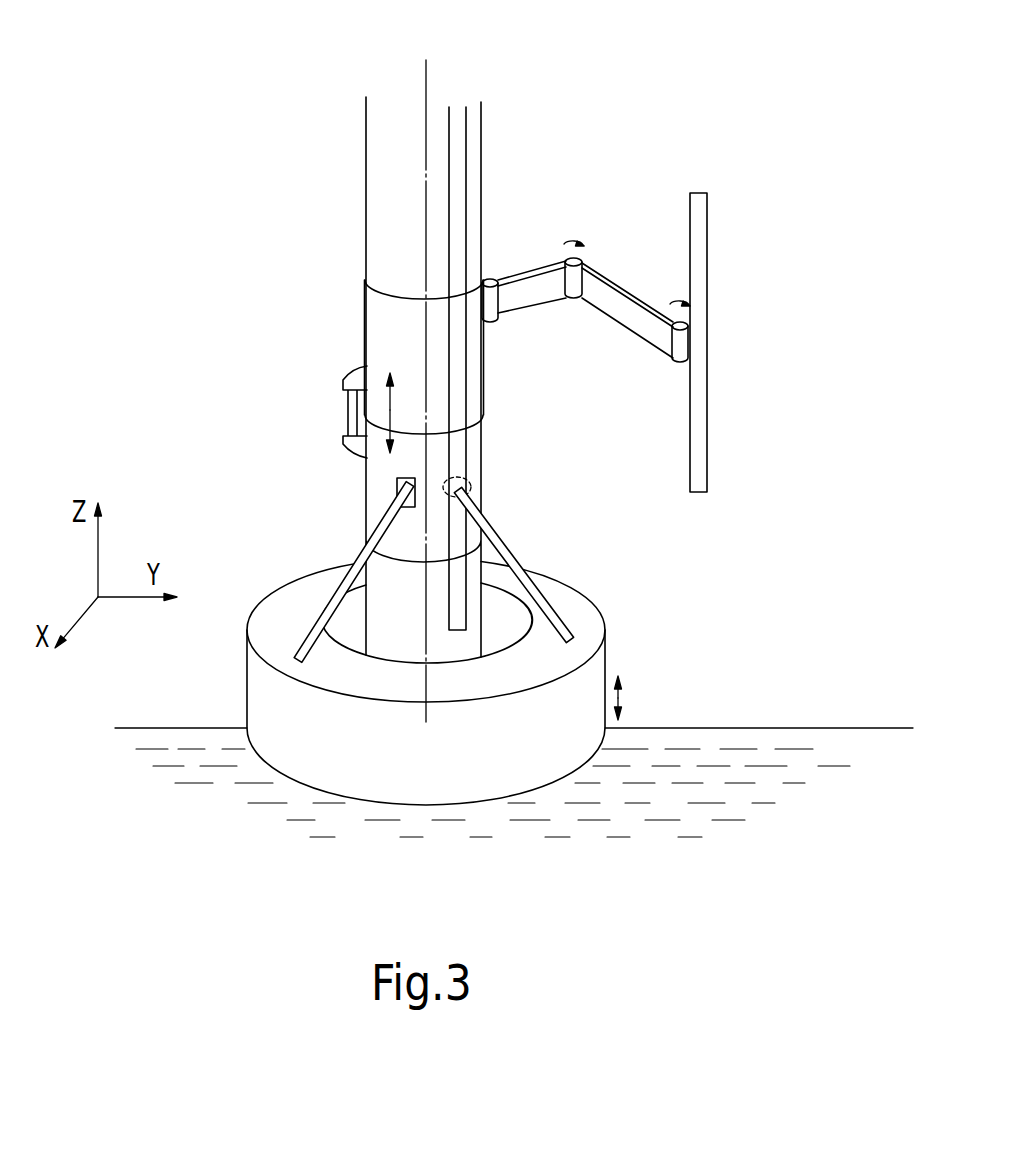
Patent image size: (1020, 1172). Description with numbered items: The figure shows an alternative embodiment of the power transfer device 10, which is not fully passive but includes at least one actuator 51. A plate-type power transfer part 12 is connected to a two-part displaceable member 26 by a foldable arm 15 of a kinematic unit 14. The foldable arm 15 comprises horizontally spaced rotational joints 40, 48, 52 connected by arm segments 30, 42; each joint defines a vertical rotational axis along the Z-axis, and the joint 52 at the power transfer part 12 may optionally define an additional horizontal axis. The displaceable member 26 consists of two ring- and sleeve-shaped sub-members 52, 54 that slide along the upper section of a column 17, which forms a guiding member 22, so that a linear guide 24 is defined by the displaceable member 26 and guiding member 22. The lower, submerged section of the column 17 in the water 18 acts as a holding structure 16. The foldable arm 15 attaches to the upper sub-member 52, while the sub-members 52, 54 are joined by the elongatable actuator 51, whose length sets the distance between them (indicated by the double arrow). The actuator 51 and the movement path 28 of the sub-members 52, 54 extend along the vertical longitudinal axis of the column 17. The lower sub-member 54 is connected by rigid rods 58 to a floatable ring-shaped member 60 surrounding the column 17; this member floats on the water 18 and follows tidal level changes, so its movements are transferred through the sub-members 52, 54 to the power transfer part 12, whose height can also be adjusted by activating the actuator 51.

The power transfer device 10 is at (639, 96).
The power transfer part 12 is at (707, 280).
The kinematic unit 14 is at (547, 132).
The foldable arm 15 is at (577, 341).
The holding structure 16 is at (197, 398).
The column 17 is at (263, 185).
The water 18 is at (856, 699).
The guiding member 22 is at (383, 152).
The linear guide 24 is at (195, 348).
The displaceable member 26 is at (536, 427).
The movement path 28 is at (422, 88).
The arm segment 30 is at (522, 285).
The rotational joint 40 is at (482, 275).
The arm segment 42 is at (612, 305).
The rotational joint 48 is at (570, 300).
The actuator 51 is at (318, 448).
The upper sub-member 52 is at (385, 312).
The lower sub-member 54 is at (375, 492).
The rigid rods 58 is at (345, 597).
The floatable ring-shaped member 60 is at (592, 668).